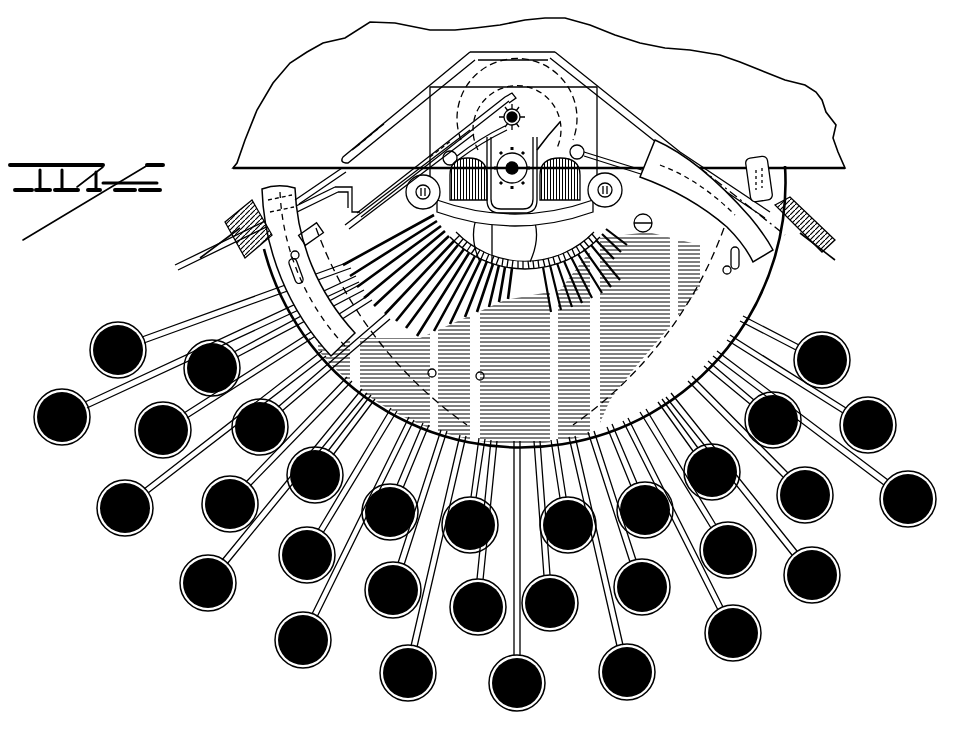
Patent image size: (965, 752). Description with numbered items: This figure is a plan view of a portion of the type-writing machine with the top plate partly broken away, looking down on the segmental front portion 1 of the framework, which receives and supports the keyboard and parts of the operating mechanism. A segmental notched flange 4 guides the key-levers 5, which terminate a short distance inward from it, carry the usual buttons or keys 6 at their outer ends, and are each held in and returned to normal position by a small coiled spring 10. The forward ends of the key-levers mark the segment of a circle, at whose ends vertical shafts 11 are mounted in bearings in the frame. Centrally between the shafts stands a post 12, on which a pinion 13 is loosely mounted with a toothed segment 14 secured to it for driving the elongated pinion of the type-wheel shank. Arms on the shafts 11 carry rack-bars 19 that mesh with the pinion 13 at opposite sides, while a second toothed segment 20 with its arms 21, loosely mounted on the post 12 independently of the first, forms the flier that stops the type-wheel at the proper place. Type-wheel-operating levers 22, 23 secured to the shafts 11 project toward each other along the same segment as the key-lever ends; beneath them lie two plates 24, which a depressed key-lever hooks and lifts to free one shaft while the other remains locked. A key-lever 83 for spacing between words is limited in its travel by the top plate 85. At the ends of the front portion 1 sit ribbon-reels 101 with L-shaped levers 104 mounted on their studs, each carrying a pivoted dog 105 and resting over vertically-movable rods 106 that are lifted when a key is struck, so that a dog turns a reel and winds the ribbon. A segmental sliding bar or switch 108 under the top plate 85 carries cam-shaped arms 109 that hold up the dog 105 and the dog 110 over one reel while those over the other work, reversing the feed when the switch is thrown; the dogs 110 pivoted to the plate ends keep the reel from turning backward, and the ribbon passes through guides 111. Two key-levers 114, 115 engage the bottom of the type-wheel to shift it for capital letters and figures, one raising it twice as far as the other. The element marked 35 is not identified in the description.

The segmental front portion 1 is at (525, 306).
The segmental notched flange 4 is at (392, 233).
The key-levers 5 is at (622, 262).
The buttons or keys 6 is at (485, 516).
The coiled springs 10 is at (433, 368).
The vertical shafts 11 is at (514, 191).
The post 12 is at (512, 163).
The pinion 13 is at (540, 150).
The toothed segment 14 is at (525, 118).
The rack-bars 19 is at (562, 124).
The toothed segment 20 is at (457, 157).
The arms 21 is at (513, 192).
The type-wheel-operating lever 22 is at (660, 232).
The type-wheel-operating lever 23 is at (392, 214).
The plates 24 is at (567, 179).
The cover plate 35 is at (690, 140).
The key-lever 83 is at (520, 290).
The top plate 85 is at (520, 326).
The ribbon-reels 101 is at (517, 228).
The L-shaped levers 104 is at (640, 164).
The pivoted dog 105 is at (309, 231).
The vertically-movable rods 106 is at (582, 146).
The segmental sliding bar or switch 108 is at (478, 372).
The cam-shaped arms 109 is at (283, 198).
The dogs 110 is at (308, 182).
The guides 111 is at (742, 265).
The key-lever 114 is at (398, 178).
The key-lever 115 is at (422, 153).